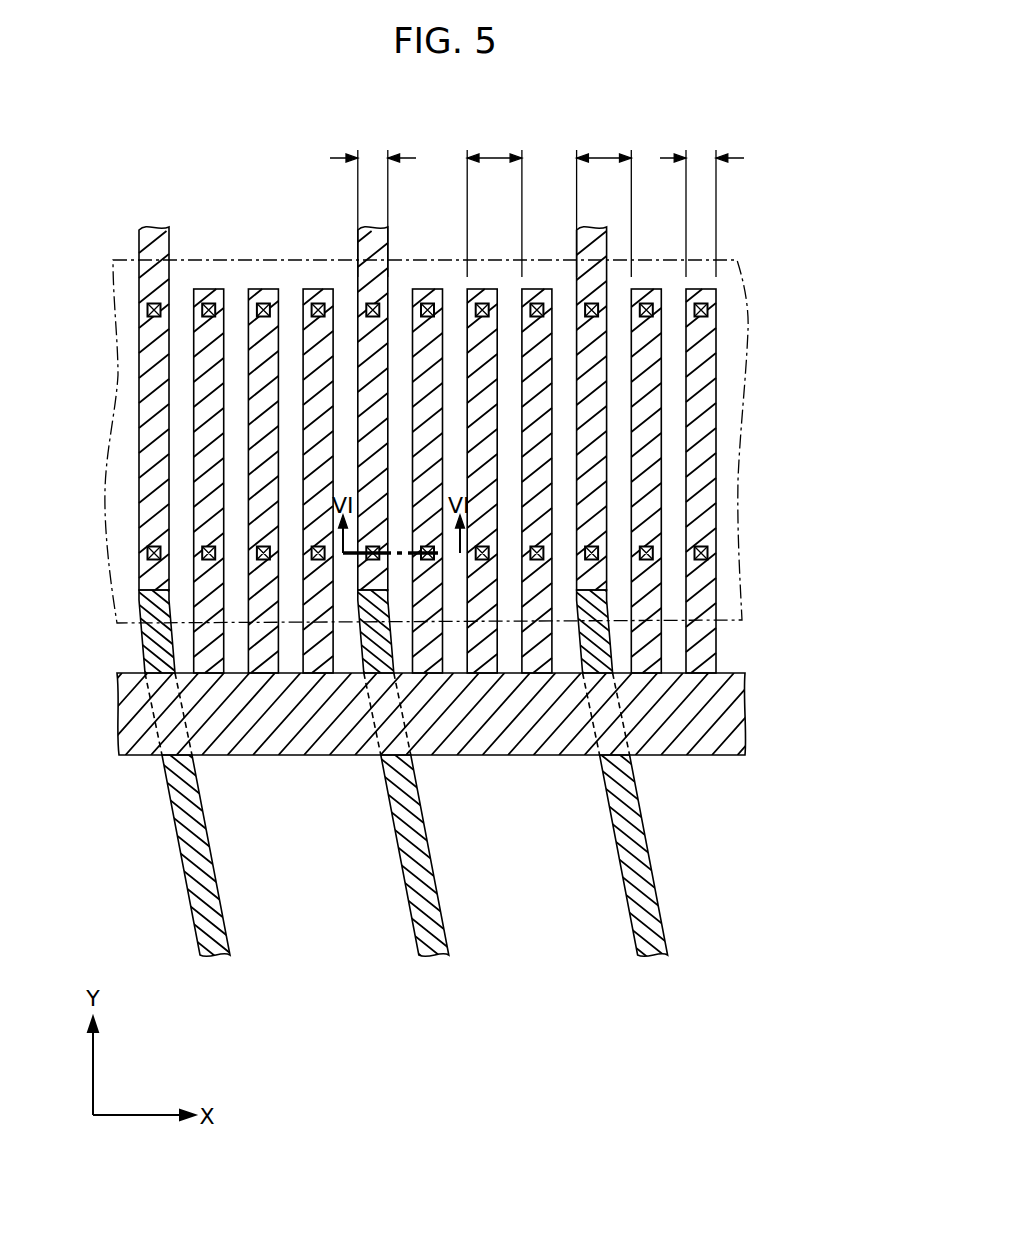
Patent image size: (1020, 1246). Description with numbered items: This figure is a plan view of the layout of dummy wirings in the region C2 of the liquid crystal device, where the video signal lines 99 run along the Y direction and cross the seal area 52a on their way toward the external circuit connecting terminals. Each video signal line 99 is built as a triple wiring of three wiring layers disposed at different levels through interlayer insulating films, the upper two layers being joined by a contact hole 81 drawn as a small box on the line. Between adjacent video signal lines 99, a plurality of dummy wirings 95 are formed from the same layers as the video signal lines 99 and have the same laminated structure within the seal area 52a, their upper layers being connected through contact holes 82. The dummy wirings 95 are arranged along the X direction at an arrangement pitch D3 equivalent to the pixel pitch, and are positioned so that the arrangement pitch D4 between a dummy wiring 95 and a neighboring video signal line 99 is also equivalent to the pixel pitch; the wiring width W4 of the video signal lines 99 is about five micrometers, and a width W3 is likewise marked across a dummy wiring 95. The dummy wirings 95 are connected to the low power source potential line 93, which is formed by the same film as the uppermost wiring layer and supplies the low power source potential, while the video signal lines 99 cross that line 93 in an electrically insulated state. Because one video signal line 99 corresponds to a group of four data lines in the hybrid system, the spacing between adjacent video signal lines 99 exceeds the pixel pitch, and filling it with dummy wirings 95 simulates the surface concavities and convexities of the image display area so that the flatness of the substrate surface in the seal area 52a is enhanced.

The video signal line 99 is at (153, 228).
The dummy wiring 95 is at (203, 289).
The contact hole 81 is at (147, 310).
The contact hole 82 is at (708, 310).
The seal area 52a is at (746, 455).
The low power source potential line 93 is at (738, 705).
The region C2 is at (771, 85).
The wiring width of the video signal lines W4 is at (373, 204).
The arrangement pitch of the dummy wirings D3 is at (494, 204).
The arrangement pitch between dummy wirings and video signal lines D4 is at (604, 204).
The width W3 is at (702, 204).